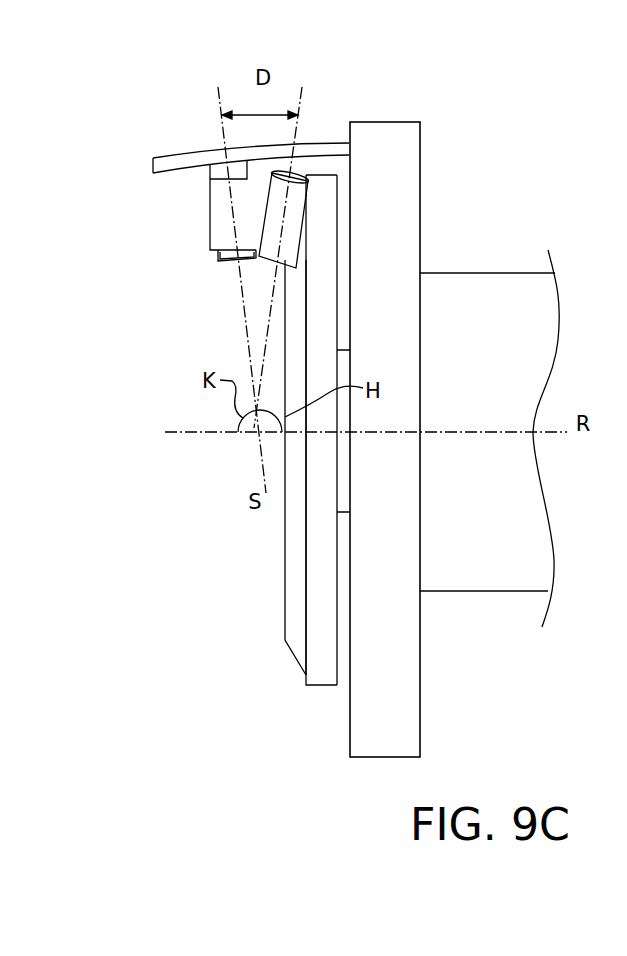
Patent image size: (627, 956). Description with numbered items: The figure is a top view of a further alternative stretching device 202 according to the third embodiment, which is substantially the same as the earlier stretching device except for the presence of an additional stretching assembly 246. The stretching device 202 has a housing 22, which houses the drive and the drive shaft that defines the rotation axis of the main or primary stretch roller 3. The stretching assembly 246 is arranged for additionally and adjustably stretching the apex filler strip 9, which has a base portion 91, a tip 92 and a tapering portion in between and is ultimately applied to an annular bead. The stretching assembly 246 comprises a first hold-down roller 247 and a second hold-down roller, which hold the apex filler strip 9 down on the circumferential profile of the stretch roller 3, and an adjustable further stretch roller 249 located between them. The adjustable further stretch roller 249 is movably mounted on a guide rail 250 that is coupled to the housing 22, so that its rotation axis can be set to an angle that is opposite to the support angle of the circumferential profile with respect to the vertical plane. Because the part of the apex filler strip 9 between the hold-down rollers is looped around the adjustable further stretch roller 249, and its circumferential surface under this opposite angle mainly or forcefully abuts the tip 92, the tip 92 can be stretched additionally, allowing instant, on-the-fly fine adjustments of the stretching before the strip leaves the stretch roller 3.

The further alternative stretching device 202 is at (475, 133).
The housing 22 is at (502, 563).
The stretch roller 3 is at (323, 678).
The apex filler strip 9 is at (297, 650).
The guide rail 250 is at (197, 157).
The tip 92 is at (215, 182).
The base portion 91 is at (222, 250).
The adjustable further stretch roller 249 is at (227, 263).
The first hold-down roller 247 is at (303, 173).
The stretching assembly 246 is at (183, 278).